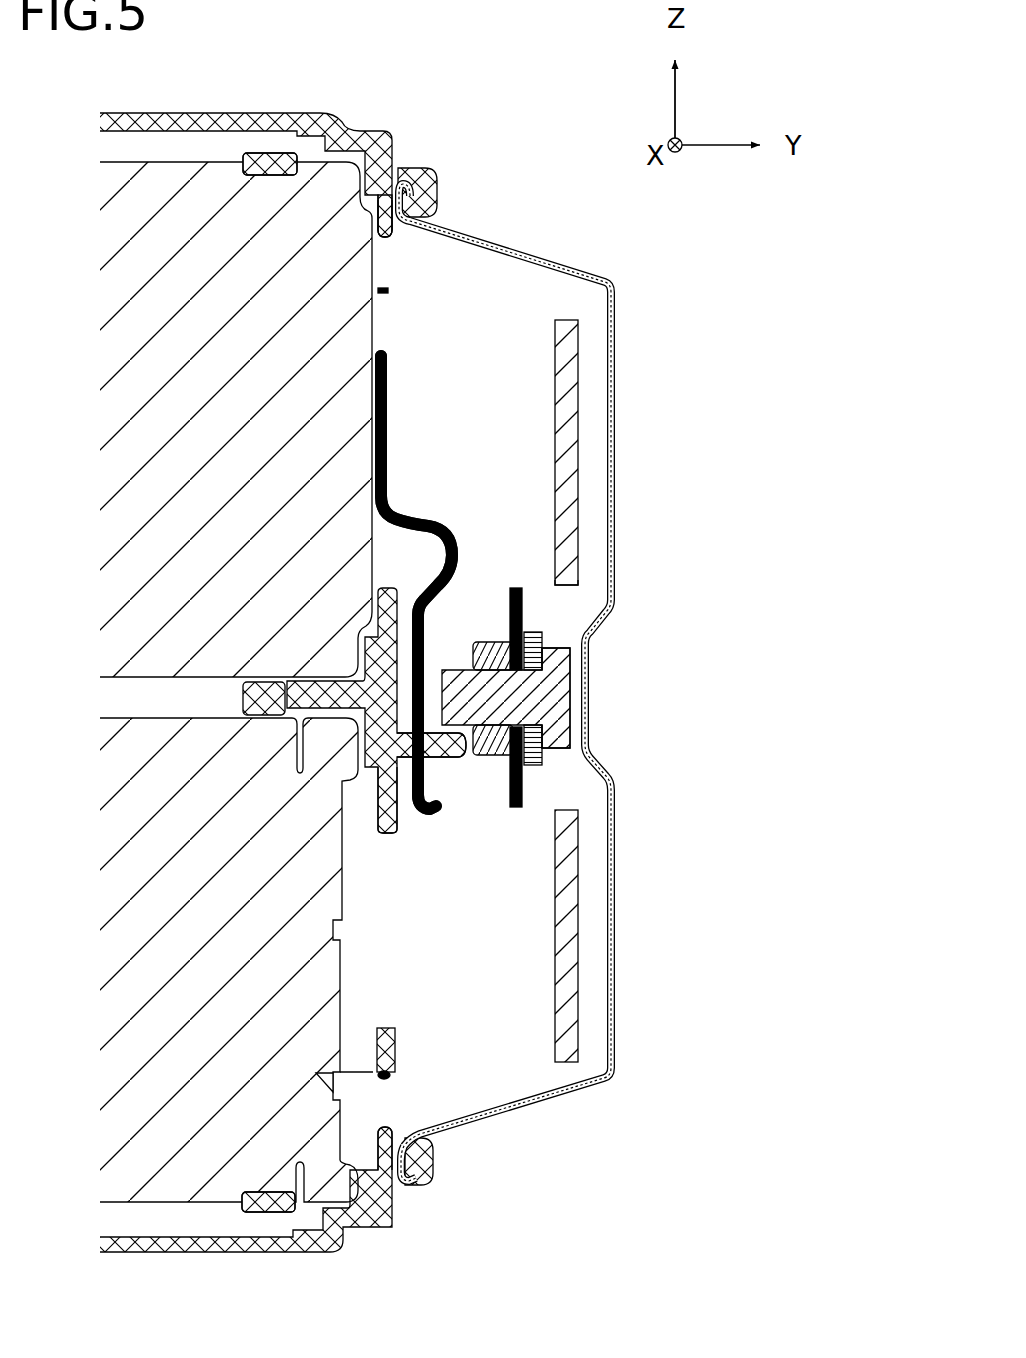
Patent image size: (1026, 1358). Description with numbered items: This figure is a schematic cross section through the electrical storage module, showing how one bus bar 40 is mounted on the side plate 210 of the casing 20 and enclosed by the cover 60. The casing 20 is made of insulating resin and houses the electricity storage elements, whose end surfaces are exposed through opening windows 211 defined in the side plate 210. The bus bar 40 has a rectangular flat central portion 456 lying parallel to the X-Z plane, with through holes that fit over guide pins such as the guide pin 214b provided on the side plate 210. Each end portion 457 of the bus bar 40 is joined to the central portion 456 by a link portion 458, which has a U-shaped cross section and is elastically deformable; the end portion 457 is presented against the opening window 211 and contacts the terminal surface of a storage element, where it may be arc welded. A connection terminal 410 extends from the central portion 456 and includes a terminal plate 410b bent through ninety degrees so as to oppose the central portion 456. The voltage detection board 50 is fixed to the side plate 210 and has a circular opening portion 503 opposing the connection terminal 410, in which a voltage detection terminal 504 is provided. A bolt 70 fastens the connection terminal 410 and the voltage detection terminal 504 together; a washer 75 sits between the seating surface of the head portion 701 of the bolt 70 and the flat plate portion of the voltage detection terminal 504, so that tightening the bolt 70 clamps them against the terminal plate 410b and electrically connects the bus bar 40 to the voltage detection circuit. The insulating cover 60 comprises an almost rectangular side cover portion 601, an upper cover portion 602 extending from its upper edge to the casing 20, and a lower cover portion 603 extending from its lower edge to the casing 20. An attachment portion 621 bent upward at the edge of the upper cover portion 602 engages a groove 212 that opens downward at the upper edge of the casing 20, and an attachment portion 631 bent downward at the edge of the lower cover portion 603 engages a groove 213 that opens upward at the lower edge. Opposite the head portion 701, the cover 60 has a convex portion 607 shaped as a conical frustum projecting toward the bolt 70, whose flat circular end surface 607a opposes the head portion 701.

The casing 20 is at (212, 106).
The attachment portion 621 is at (403, 180).
The attachment portion 631 is at (403, 1172).
The groove 212 is at (397, 226).
The opening window 211 is at (389, 238).
The groove 213 is at (393, 1147).
The upper cover portion 602 is at (503, 252).
The side cover portion 601 is at (618, 400).
The convex portion 607 is at (594, 775).
The end surface 607a is at (586, 689).
The lower cover portion 603 is at (513, 1120).
The cover 60 is at (620, 288).
The voltage detection board 50 is at (583, 467).
The opening portion 503 is at (573, 586).
The voltage detection terminal 504 is at (521, 805).
The bus bar 40 is at (392, 470).
The end portion 457 is at (388, 430).
The link portion 458 is at (456, 548).
The central portion 456 is at (427, 633).
The side plate 210 is at (400, 817).
The guide pin 214b is at (441, 759).
The bolt 70 is at (557, 644).
The head portion 701 is at (560, 722).
The washer 75 is at (526, 768).
The connection terminal 410 is at (601, 772).
The terminal plate 410b is at (533, 817).